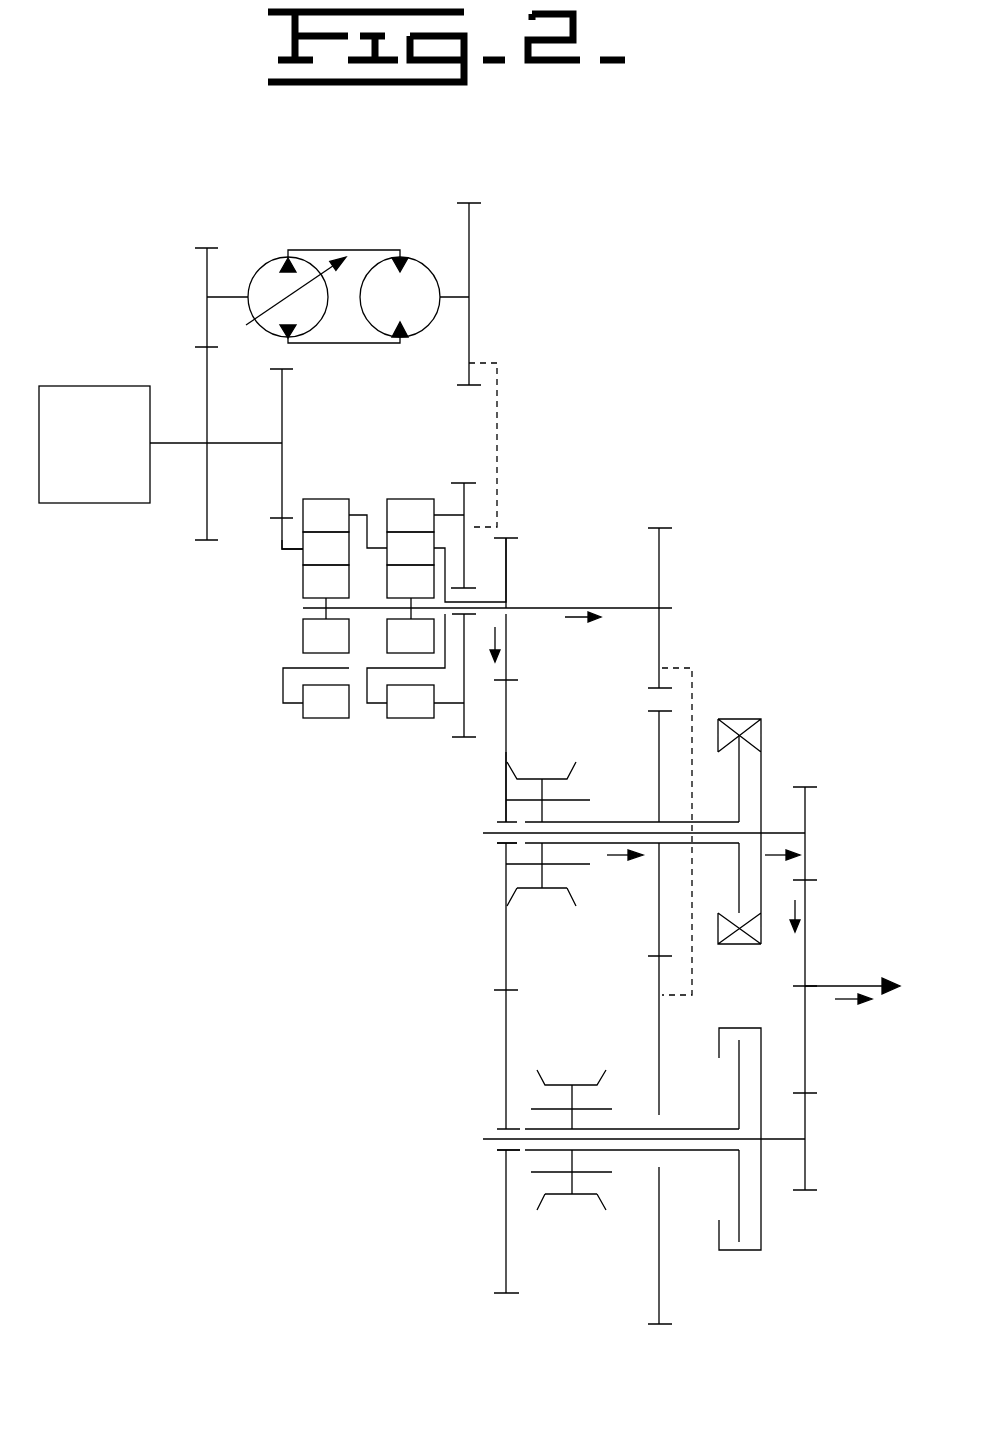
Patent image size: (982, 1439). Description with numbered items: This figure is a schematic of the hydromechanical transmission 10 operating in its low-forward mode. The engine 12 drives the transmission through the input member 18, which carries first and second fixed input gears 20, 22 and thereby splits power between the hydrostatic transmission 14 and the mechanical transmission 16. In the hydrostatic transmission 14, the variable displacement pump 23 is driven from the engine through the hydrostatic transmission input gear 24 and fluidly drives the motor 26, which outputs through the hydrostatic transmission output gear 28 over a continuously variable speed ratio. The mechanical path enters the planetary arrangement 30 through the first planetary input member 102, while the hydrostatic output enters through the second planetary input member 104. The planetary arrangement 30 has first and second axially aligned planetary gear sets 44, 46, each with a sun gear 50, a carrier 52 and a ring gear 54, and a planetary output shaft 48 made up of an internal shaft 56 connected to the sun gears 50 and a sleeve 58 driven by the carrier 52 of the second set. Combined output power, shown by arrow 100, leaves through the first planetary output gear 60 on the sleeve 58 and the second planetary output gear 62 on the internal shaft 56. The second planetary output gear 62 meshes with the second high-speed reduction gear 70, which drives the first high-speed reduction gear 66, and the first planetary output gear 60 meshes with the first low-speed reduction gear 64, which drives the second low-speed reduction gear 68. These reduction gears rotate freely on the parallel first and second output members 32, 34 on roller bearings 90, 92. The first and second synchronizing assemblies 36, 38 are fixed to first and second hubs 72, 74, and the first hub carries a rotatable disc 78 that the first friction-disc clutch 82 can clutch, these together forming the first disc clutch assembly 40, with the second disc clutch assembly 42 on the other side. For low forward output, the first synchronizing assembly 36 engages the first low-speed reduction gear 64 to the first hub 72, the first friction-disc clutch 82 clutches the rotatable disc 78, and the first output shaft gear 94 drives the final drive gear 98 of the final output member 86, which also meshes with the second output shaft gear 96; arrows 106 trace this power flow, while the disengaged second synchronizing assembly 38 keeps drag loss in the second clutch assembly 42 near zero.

The hydromechanical transmission 10 is at (641, 275).
The engine 12 is at (123, 444).
The hydrostatic transmission 14 is at (330, 248).
The mechanical transmission 16 is at (568, 1012).
The input member 18 is at (278, 443).
The first fixed input gear 20 is at (196, 505).
The second fixed input gear 22 is at (285, 466).
The variable displacement pump 23 is at (268, 258).
The hydrostatic transmission input gear 24 is at (200, 262).
The motor 26 is at (410, 258).
The hydrostatic transmission output gear 28 is at (471, 240).
The planetary arrangement 30 is at (379, 654).
The first output member 32 is at (483, 833).
The second output member 34 is at (492, 1139).
The first synchronizing assembly 36 is at (535, 778).
The second synchronizing assembly 38 is at (580, 1196).
The first disc clutch assembly 40 is at (749, 945).
The second disc clutch assembly 42 is at (762, 1270).
The first planetary gear set 44 is at (303, 706).
The second planetary gear set 46 is at (387, 712).
The planetary output shaft 48 is at (639, 492).
The sun gear 50 is at (326, 581).
The carrier 52 is at (326, 548).
The ring gear 54 is at (326, 515).
The internal shaft 56 is at (598, 607).
The sleeve 58 is at (500, 604).
The first planetary output gear 60 is at (508, 532).
The second planetary output gear 62 is at (663, 538).
The first low-speed reduction gear 64 is at (505, 754).
The first high-speed reduction gear 66 is at (656, 718).
The second low-speed reduction gear 68 is at (505, 1240).
The second high-speed reduction gear 70 is at (658, 1222).
The first hub 72 is at (694, 822).
The second hub 74 is at (736, 1130).
The rotatable disc 78 is at (738, 854).
The first friction-disc clutch 82 is at (726, 716).
The final output member 86 is at (848, 985).
The roller bearing 90 is at (500, 850).
The roller bearing 92 is at (500, 1152).
The first output shaft gear 94 is at (808, 787).
The second output shaft gear 96 is at (810, 1122).
The final drive gear 98 is at (800, 925).
The arrow 100 is at (512, 630).
The first planetary input member 102 is at (280, 548).
The second planetary input member 104 is at (460, 485).
The arrows 106 is at (510, 662).